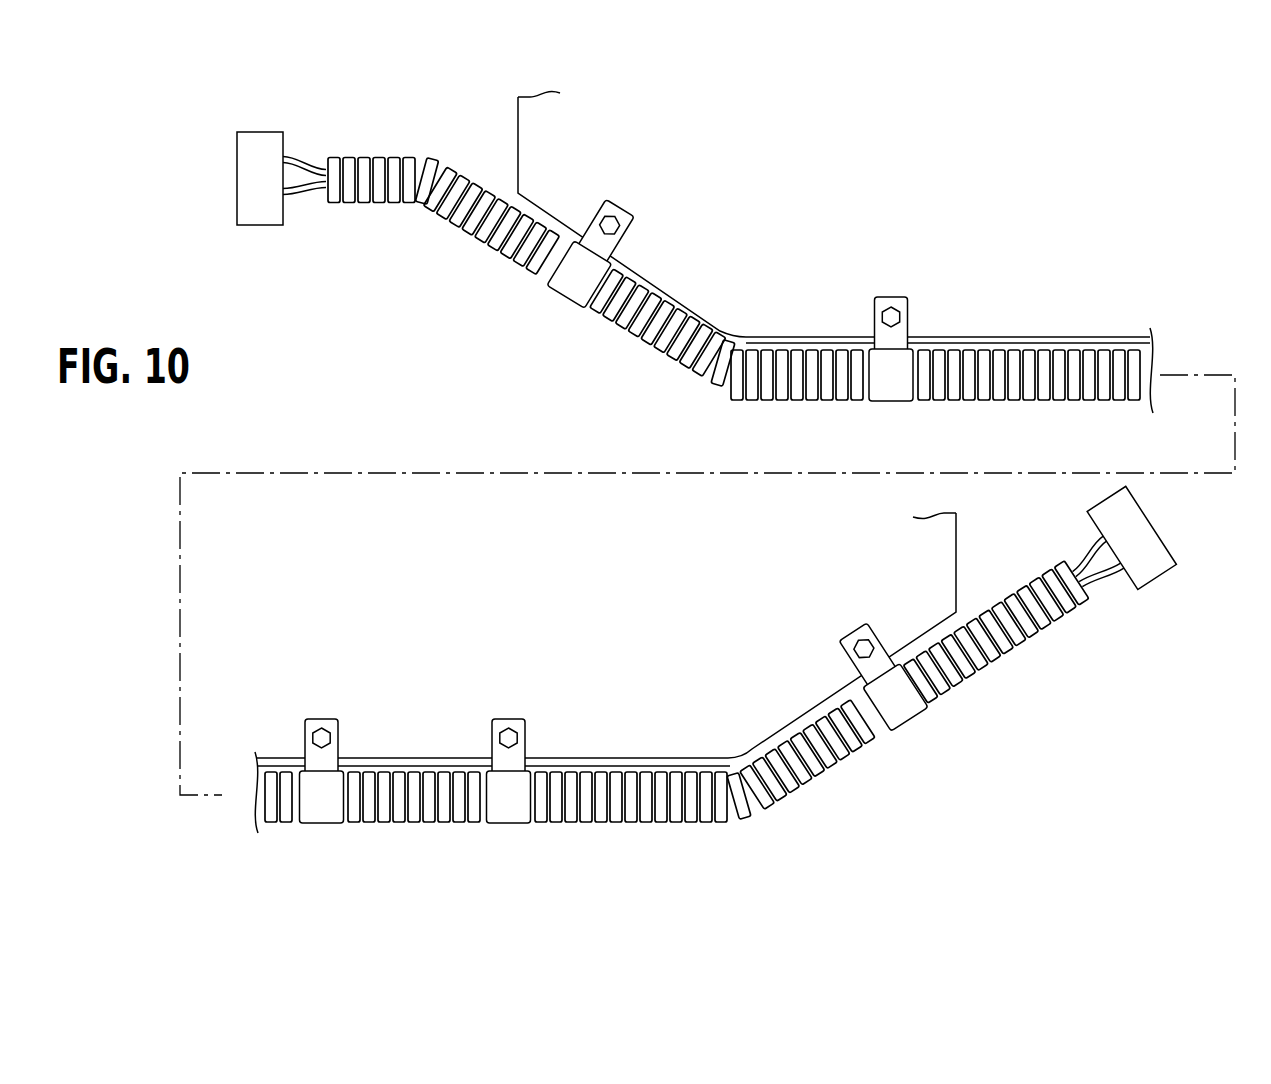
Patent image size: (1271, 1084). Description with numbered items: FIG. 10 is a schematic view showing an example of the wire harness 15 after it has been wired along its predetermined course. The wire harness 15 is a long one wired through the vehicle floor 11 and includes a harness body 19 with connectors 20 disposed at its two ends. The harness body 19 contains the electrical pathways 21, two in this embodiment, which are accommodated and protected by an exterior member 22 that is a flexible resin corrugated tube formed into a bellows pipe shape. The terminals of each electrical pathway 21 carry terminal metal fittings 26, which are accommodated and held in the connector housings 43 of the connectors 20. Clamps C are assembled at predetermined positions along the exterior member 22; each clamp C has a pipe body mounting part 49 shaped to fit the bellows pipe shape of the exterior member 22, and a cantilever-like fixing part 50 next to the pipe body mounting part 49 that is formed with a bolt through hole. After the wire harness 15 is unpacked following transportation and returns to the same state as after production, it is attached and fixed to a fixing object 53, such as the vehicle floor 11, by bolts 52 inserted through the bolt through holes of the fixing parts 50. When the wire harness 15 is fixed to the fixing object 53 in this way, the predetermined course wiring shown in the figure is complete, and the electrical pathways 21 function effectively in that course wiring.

The vehicle floor 11 is at (1148, 343).
The wire harness 15 is at (710, 482).
The harness body 19 is at (640, 357).
The connector 20 is at (710, 363).
The electrical pathway 21 is at (304, 156).
The exterior member 22 is at (721, 340).
The terminal metal fitting 26 is at (262, 153).
The connector housing 43 is at (264, 218).
The pipe body mounting part 49 is at (905, 380).
The fixing part 50 is at (898, 334).
The bolt 52 is at (606, 223).
The fixing object 53 is at (518, 150).
The clamp C is at (625, 534).